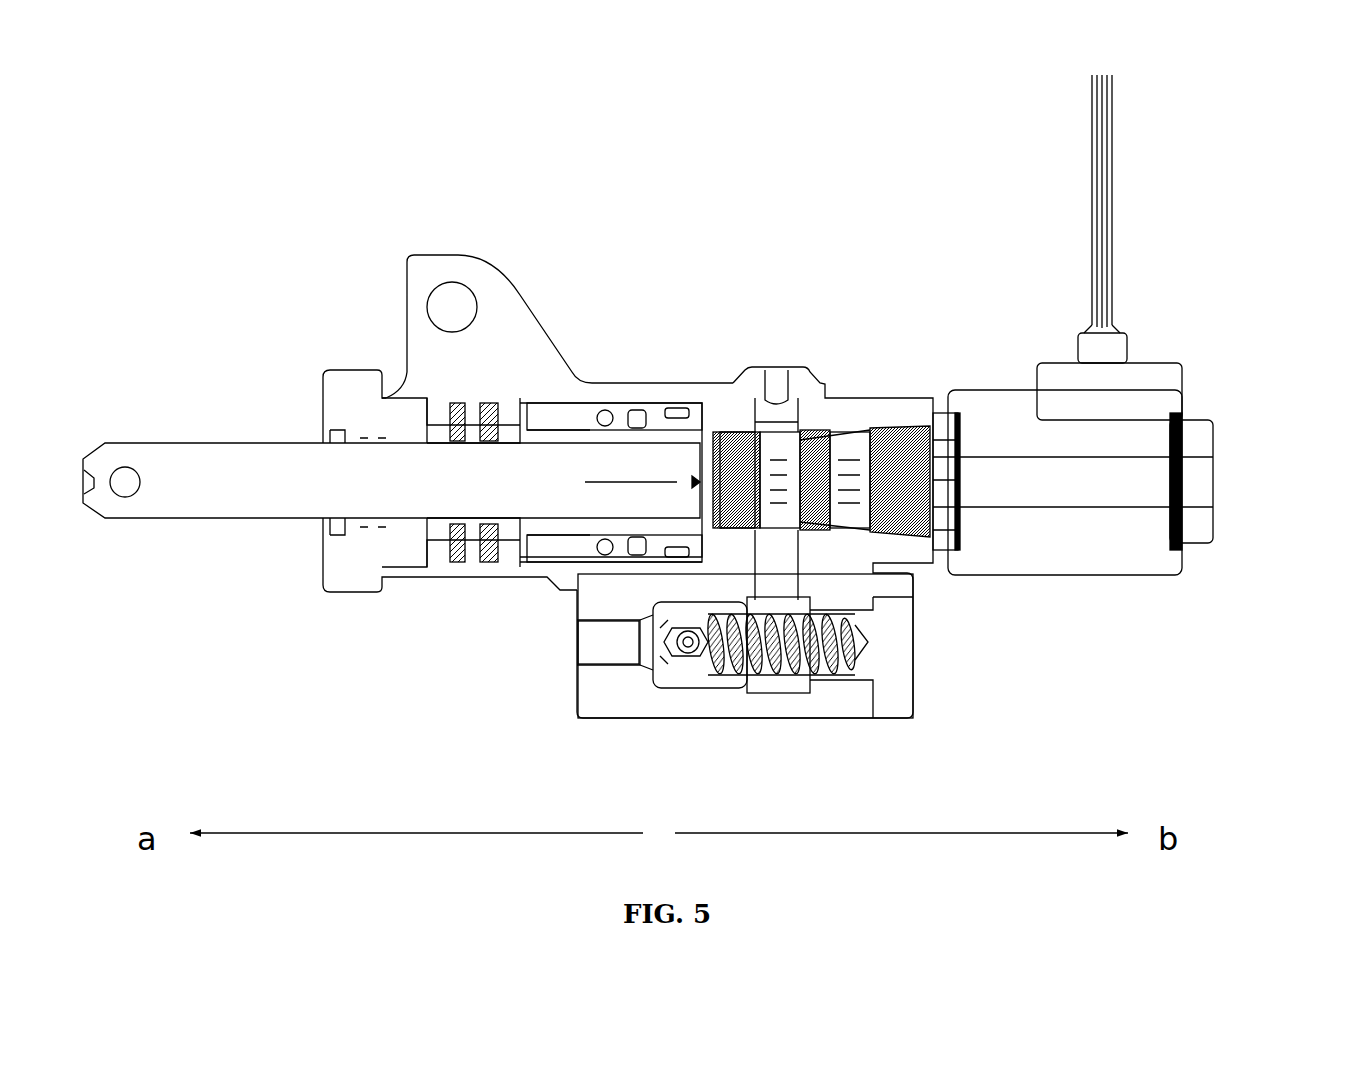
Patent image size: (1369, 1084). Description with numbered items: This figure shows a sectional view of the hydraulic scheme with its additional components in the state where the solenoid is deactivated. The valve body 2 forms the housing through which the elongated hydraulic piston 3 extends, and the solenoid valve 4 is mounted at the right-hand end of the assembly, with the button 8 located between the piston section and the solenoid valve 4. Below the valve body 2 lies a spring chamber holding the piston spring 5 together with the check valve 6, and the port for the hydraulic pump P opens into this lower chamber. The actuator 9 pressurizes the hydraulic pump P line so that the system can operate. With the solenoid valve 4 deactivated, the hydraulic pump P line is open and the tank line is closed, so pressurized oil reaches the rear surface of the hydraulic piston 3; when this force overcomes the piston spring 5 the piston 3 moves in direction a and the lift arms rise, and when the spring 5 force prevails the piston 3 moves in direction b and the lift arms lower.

The valve body 2 is at (478, 587).
The piston 3 is at (222, 438).
The solenoid valve 4 is at (1047, 578).
The piston spring 5 is at (538, 418).
The check valve 6 is at (697, 661).
The button 8 is at (975, 387).
The actuator 9 is at (918, 703).
The hydraulic pump P is at (571, 637).